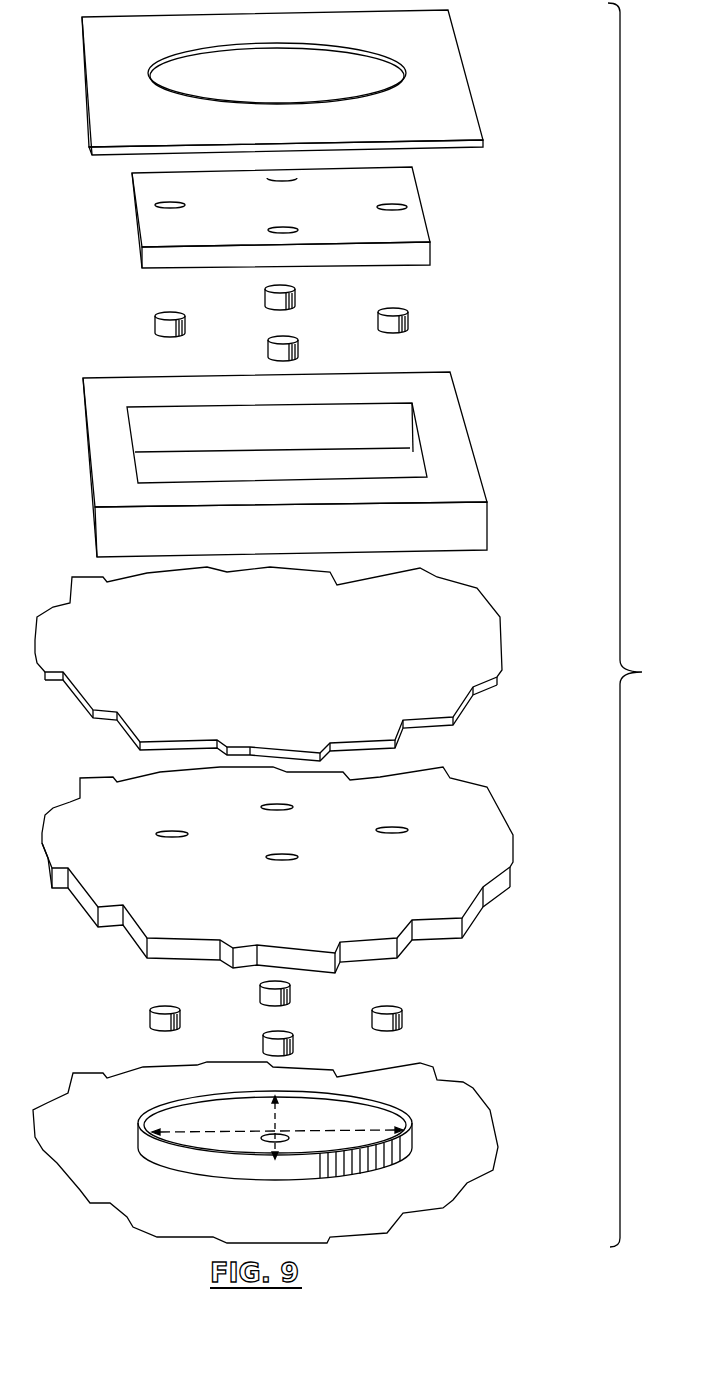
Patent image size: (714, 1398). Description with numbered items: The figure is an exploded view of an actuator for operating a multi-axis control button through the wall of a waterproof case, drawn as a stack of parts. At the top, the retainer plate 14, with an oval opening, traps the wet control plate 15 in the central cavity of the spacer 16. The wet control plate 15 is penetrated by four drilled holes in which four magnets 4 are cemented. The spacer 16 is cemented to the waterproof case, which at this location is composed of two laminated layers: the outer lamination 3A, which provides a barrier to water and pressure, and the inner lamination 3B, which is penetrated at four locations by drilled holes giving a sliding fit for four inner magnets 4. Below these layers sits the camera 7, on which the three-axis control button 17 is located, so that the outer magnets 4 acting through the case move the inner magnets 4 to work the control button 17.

The retainer plate 14 is at (433, 58).
The wet control plate 15 is at (397, 179).
The magnets 4 is at (411, 318).
The spacer 16 is at (448, 423).
The outer lamination 3A is at (463, 622).
The inner lamination 3B is at (472, 817).
The control button 17 is at (413, 1133).
The camera 7 is at (450, 1187).